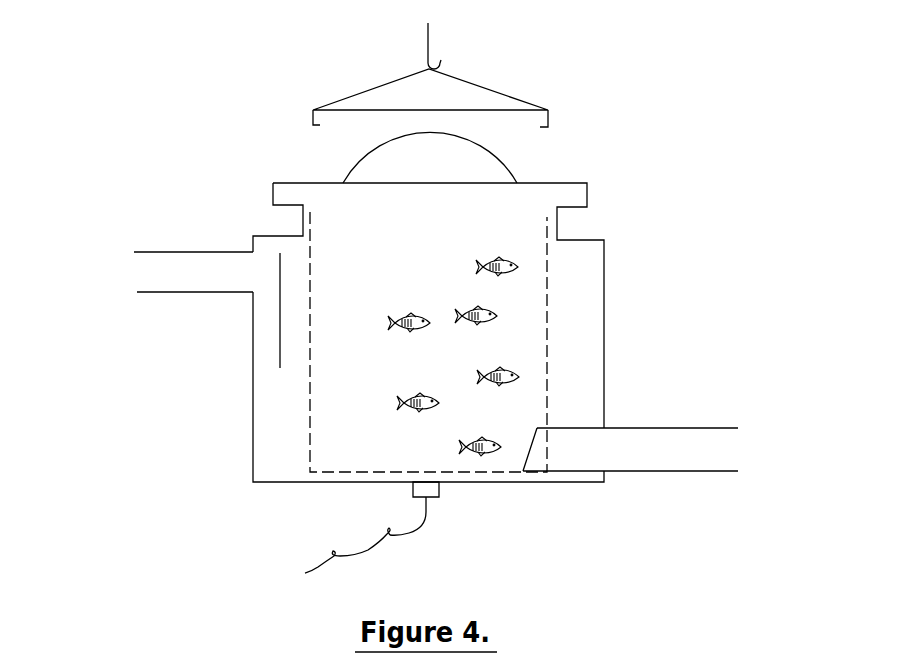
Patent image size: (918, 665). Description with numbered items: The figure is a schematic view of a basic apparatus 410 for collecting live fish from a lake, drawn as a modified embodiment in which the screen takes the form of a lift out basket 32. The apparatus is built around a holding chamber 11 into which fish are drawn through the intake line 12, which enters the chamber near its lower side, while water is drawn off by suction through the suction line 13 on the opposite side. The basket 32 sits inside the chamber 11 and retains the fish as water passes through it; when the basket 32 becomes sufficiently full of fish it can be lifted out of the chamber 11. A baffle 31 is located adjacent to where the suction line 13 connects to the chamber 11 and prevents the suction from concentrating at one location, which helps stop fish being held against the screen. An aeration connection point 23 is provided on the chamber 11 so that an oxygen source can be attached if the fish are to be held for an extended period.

The basic apparatus 410 is at (633, 113).
The holding chamber 11 is at (582, 275).
The intake line 12 is at (670, 448).
The suction line 13 is at (203, 268).
The aeration connection point 23 is at (368, 550).
The baffle 31 is at (275, 337).
The lift out basket 32 is at (547, 355).